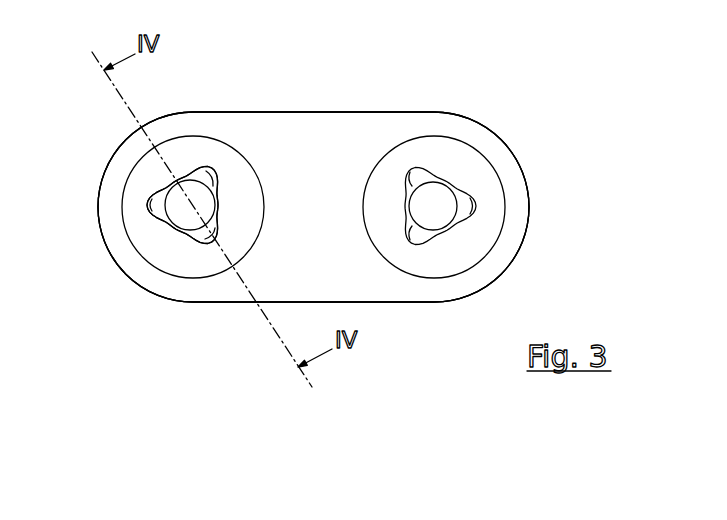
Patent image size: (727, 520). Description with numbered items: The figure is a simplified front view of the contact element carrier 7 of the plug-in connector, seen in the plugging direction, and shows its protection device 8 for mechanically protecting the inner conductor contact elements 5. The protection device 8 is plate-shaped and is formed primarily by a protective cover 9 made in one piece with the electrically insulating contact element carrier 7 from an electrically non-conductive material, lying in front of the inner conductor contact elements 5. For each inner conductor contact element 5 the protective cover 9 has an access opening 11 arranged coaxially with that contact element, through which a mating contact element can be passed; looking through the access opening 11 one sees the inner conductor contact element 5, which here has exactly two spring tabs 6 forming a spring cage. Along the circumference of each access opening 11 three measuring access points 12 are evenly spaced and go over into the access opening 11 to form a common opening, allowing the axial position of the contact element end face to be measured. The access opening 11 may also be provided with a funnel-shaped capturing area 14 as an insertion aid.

The inner conductor contact element 5 is at (212, 160).
The spring tab 6 is at (218, 190).
The contact element carrier 7 is at (327, 103).
The protection device 8 is at (313, 207).
The protective cover 9 is at (322, 278).
The access opening 11 is at (180, 237).
The measuring access point 12 is at (222, 183).
The funnel-shaped capturing area 14 is at (142, 170).